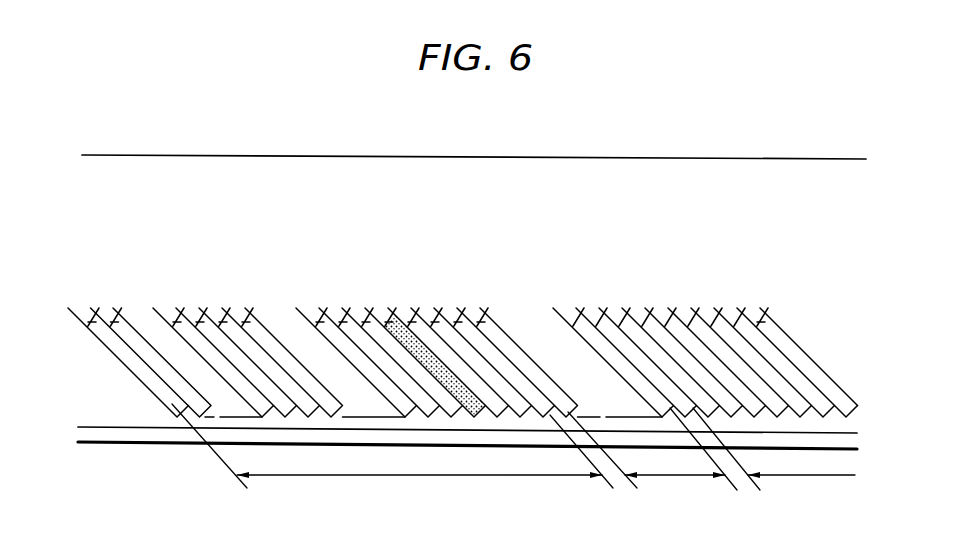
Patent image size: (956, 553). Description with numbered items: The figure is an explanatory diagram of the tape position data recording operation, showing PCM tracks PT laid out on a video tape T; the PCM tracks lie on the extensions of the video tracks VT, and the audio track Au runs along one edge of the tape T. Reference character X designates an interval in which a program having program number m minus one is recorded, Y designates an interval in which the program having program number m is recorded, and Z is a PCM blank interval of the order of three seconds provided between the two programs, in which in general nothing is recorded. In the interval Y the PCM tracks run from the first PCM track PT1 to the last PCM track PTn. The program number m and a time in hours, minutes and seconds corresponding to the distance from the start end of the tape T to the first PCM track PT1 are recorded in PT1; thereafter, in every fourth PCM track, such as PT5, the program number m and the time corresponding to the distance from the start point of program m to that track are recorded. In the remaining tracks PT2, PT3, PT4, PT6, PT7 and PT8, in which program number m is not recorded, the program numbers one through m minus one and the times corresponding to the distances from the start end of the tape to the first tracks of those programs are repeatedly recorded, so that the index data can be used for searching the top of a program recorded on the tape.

The video tape T is at (598, 150).
The audio track Au is at (138, 443).
The PCM track PTn is at (92, 322).
The PCM track PT8 is at (320, 322).
The PCM track PT7 is at (343, 322).
The PCM track PT6 is at (366, 322).
The PCM track PT5 is at (389, 322).
The PCM track PT4 is at (412, 322).
The PCM track PT3 is at (435, 322).
The PCM track PT2 is at (458, 322).
The first PCM track PT1 is at (481, 322).
The PCM track PT is at (818, 367).
The electrode gap VT is at (761, 322).
The interval Y is at (392, 454).
The PCM blank interval Z is at (652, 455).
The interval X is at (774, 455).